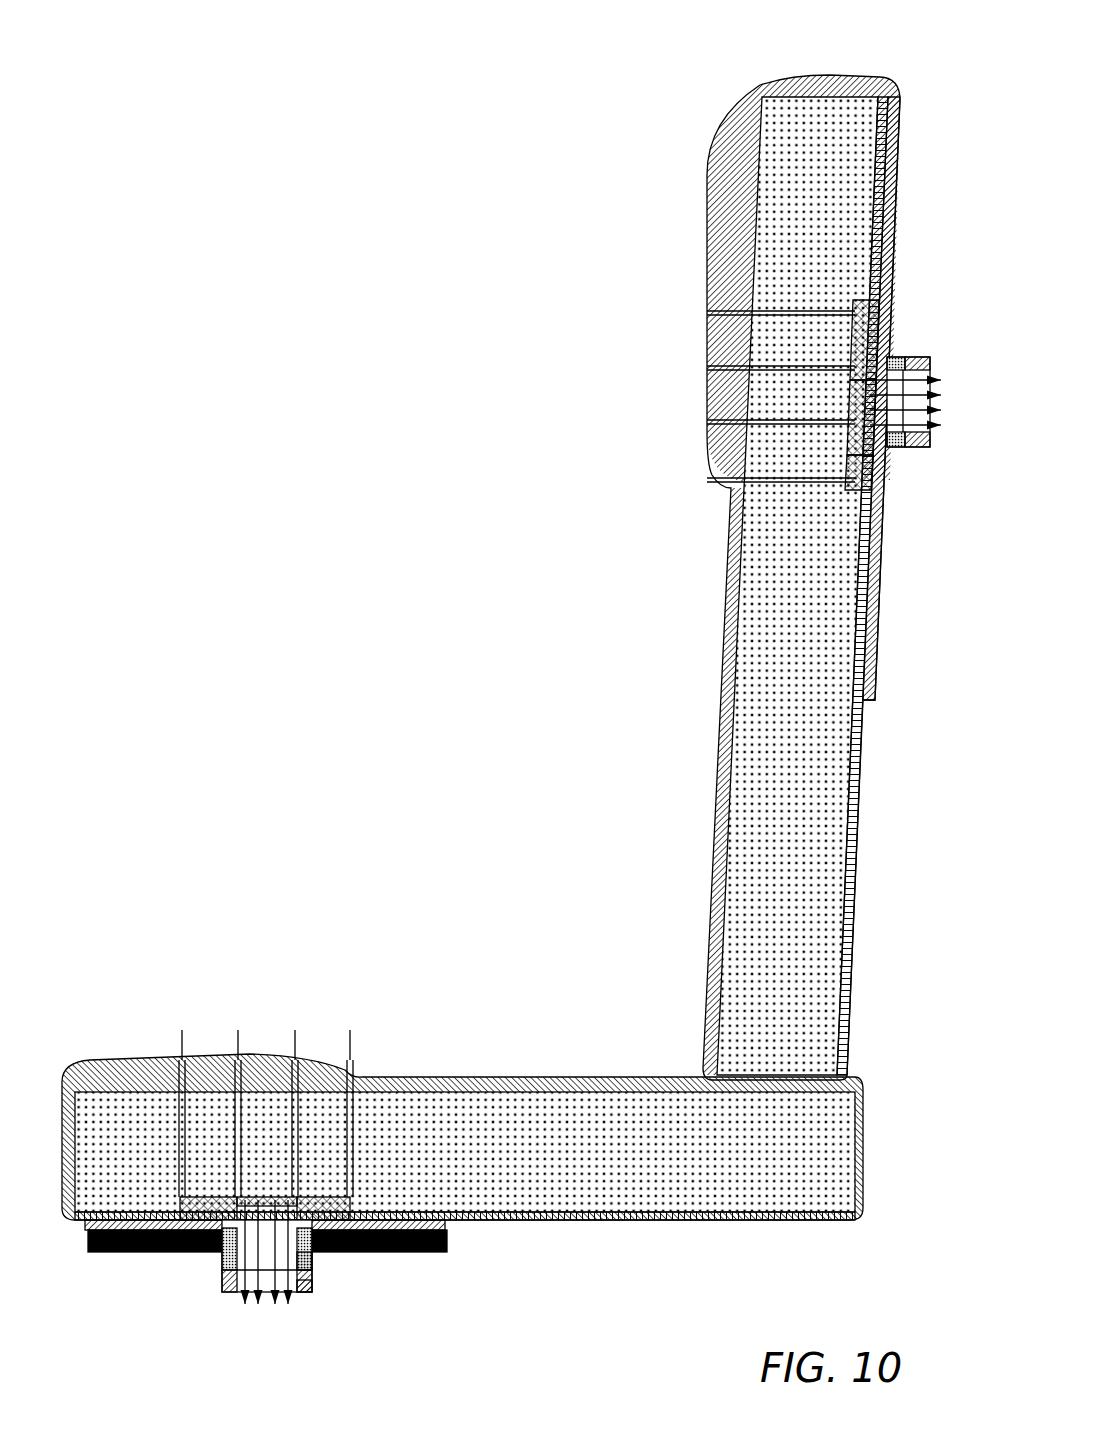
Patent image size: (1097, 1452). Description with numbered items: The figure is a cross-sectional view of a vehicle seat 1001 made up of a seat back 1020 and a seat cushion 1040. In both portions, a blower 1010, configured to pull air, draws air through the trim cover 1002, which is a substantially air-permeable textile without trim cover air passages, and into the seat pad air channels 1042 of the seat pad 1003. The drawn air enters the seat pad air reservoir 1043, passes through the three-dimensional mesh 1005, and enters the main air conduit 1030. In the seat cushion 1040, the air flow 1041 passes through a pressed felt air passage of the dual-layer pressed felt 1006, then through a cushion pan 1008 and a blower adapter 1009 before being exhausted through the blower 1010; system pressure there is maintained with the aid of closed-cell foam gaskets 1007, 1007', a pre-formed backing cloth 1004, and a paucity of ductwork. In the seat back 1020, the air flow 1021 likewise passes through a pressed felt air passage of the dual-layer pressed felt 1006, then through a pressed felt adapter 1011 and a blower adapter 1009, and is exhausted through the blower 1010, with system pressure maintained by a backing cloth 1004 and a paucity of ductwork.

The seat 1001 is at (250, 184).
The trim cover 1002 is at (735, 104).
The seat pad 1003 is at (787, 98).
The backing cloth 1004 is at (882, 98).
The three-dimensional mesh 1005 is at (850, 465).
The dual-layer pressed felt 1006 is at (894, 98).
The closed-cell foam gasket 1007 is at (335, 1257).
The closed-cell foam gasket 1007' is at (191, 1299).
The cushion pan 1008 is at (452, 1252).
The blower adapter 1009 is at (905, 357).
The blower 1010 is at (915, 447).
The pressed felt adapter 1011 is at (888, 447).
The seat back 1020 is at (517, 581).
The air flow 1021 is at (702, 473).
The main air conduit 1030 is at (762, 306).
The seat cushion 1040 is at (357, 893).
The air flow 1041 is at (345, 1030).
The seat pad air channels 1042 is at (887, 385).
The seat pad air reservoir 1043 is at (862, 312).